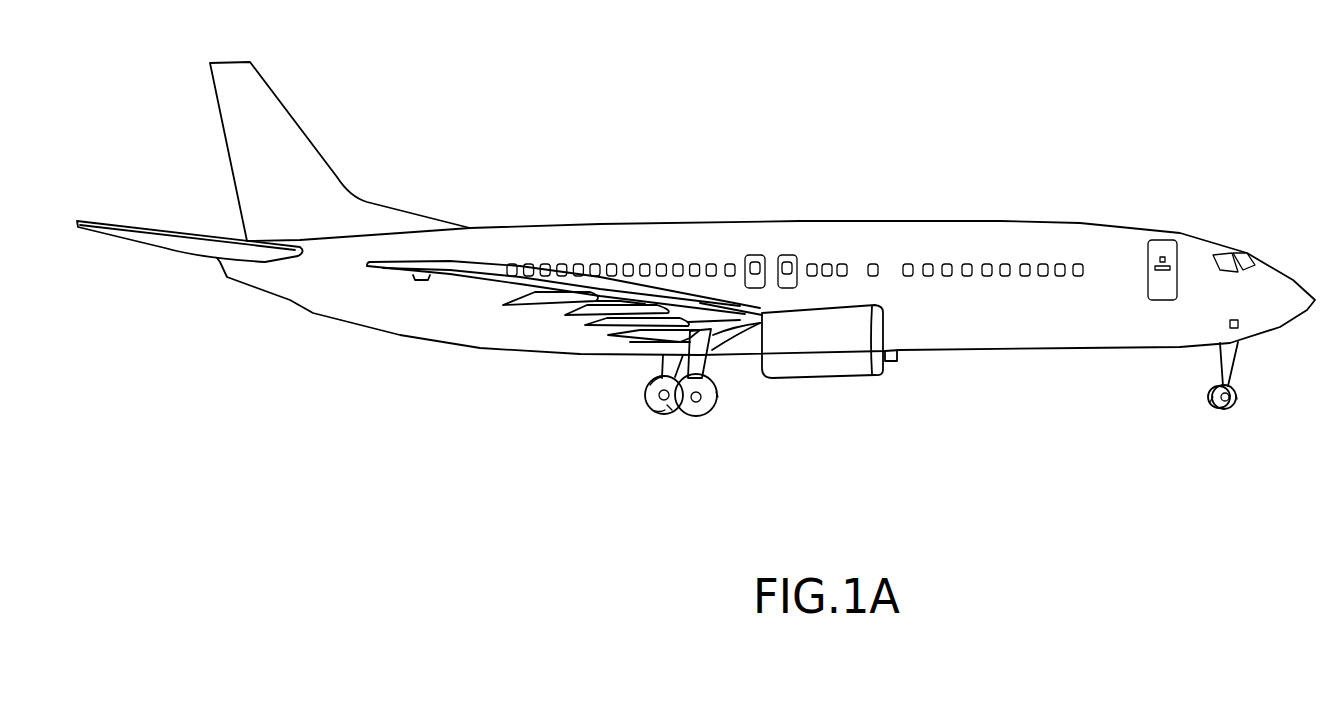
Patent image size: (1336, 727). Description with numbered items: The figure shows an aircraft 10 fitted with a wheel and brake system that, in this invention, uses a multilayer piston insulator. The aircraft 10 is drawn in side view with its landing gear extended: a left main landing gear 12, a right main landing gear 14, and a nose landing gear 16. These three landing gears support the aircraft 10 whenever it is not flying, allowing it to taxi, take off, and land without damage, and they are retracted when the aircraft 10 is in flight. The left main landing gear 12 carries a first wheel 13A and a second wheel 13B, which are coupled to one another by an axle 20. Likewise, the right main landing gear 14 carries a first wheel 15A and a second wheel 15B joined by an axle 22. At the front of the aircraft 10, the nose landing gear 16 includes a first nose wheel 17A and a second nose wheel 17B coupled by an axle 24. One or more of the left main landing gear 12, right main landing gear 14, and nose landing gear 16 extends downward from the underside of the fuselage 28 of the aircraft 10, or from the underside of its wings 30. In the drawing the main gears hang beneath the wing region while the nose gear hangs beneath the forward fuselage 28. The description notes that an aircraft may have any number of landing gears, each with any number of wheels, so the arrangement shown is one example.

The aircraft 10 is at (878, 122).
The left main landing gear 12 is at (650, 378).
The first wheel 13A is at (650, 385).
The second wheel 13B is at (665, 410).
The right main landing gear 14 is at (722, 414).
The first wheel 15A is at (718, 395).
The second wheel 15B is at (667, 405).
The nose landing gear 16 is at (1255, 383).
The first nose wheel 17A is at (1210, 402).
The second nose wheel 17B is at (1237, 399).
The axle 20 is at (656, 397).
The axle 22 is at (698, 401).
The axle 24 is at (1228, 407).
The fuselage 28 is at (1213, 345).
The wings 30 is at (758, 320).